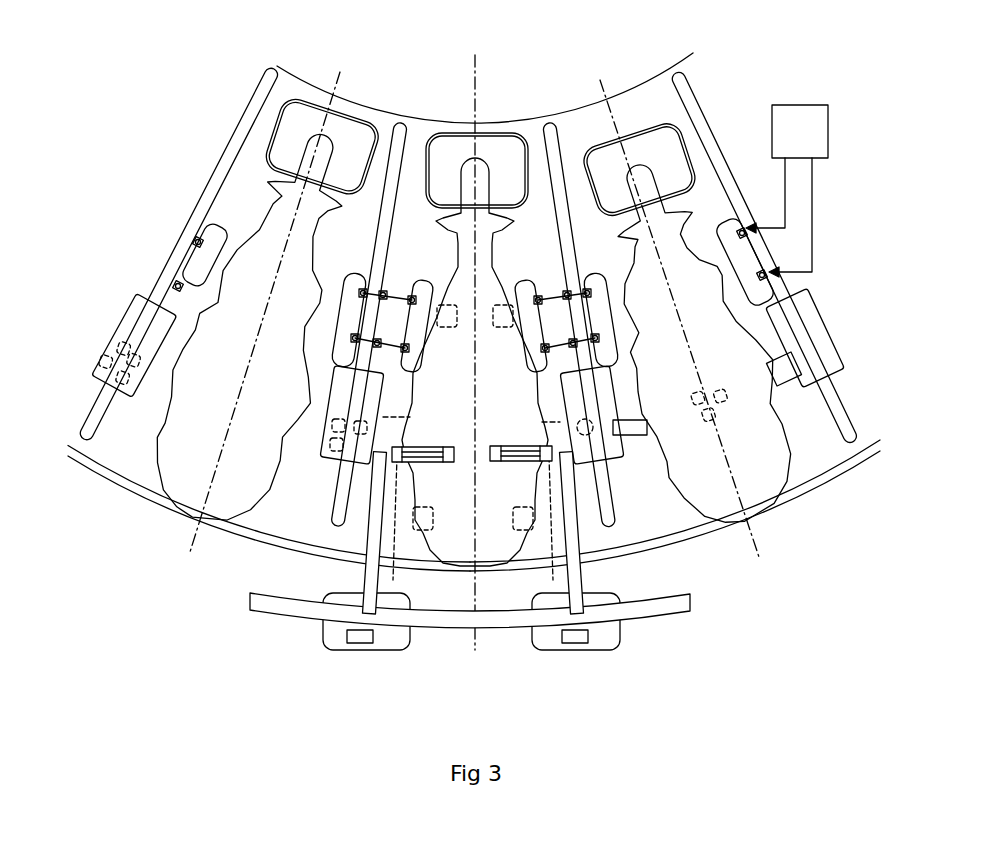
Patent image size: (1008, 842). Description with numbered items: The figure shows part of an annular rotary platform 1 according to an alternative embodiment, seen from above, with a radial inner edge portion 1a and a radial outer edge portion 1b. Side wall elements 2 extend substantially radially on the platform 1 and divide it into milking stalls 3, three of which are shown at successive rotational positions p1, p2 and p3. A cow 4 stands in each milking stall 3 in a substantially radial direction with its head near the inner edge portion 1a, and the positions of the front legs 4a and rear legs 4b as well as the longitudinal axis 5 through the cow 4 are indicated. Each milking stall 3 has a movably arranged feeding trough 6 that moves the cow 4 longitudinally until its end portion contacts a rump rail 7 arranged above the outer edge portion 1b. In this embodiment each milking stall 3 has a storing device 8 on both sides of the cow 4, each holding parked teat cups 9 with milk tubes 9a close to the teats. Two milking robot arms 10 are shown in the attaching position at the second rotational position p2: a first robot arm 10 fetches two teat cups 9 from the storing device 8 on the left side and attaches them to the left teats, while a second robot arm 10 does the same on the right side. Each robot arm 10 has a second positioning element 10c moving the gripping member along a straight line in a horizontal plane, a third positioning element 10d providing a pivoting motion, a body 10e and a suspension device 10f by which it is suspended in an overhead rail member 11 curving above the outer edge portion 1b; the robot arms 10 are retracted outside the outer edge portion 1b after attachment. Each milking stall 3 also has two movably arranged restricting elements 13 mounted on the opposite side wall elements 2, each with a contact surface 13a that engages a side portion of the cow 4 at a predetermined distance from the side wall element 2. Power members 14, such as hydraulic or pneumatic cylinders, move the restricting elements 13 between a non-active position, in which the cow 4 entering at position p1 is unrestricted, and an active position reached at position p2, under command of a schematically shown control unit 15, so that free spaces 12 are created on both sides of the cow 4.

The rotary platform 1 is at (573, 125).
The radial inner edge portion 1a is at (645, 85).
The radial outer edge portion 1b is at (810, 497).
The side wall element 2 is at (230, 157).
The milking stall 3 is at (242, 192).
The cow 4 is at (467, 225).
The front legs 4a is at (497, 307).
The rear legs 4b is at (517, 512).
The longitudinal axis 5 is at (237, 400).
The feeding trough 6 is at (292, 122).
The rump rail 7 is at (168, 507).
The storing device 8 is at (138, 337).
The teat cups 9 is at (113, 348).
The milk tubes 9a is at (640, 436).
The milking robot arm 10 is at (439, 561).
The second positioning element 10c is at (386, 545).
The third positioning element 10d is at (428, 446).
The body 10e is at (393, 645).
The suspension device 10f is at (362, 645).
The overhead rail member 11 is at (268, 607).
The free space 12 is at (365, 525).
The restricting element 13 is at (197, 273).
The contact surface 13a is at (517, 337).
The power members 14 is at (377, 340).
The control unit 15 is at (795, 123).
The first rotation position p1 is at (360, 115).
The second rotation position p2 is at (523, 137).
The third rotation position p3 is at (660, 110).